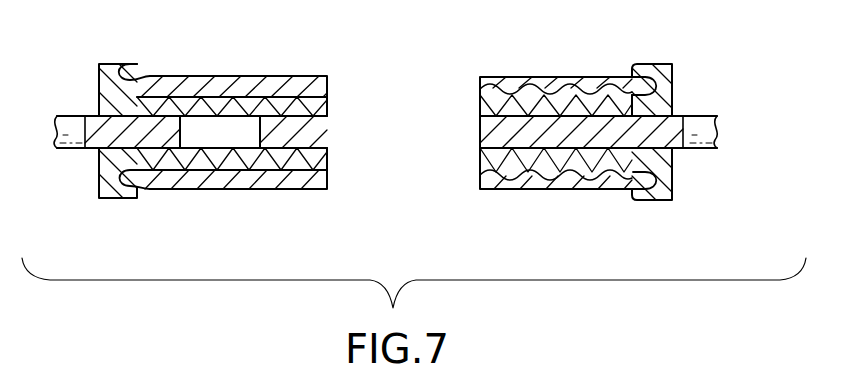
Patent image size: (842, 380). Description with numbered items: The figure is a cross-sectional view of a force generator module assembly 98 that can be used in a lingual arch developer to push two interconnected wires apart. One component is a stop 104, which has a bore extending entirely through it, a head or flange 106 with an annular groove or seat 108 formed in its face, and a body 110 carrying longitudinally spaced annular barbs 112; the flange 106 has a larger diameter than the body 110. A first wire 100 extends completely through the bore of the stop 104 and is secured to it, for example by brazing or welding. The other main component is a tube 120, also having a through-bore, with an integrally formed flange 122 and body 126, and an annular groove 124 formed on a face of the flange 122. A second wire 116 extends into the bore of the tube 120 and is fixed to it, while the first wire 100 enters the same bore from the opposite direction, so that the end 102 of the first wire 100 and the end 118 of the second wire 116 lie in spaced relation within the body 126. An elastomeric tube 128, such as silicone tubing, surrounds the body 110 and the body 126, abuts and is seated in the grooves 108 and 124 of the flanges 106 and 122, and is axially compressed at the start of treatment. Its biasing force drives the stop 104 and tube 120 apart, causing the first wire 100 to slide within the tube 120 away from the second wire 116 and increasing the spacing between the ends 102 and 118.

The force generator module assembly 98 is at (748, 134).
The first wire 100 is at (318, 128).
The end of the first wire 102 is at (252, 142).
The stop 104 is at (674, 74).
The flange of the stop 106 is at (673, 200).
The annular groove of the stop flange 108 is at (620, 190).
The body of the stop 110 is at (540, 165).
The annular barbs 112 is at (575, 88).
The second wire 116 is at (64, 149).
The end of the second wire 118 is at (197, 118).
The tube 120 is at (100, 184).
The flange of the tube 122 is at (130, 66).
The annular groove of the tube flange 124 is at (143, 190).
The body of the tube 126 is at (196, 136).
The elastomeric tube 128 is at (263, 189).